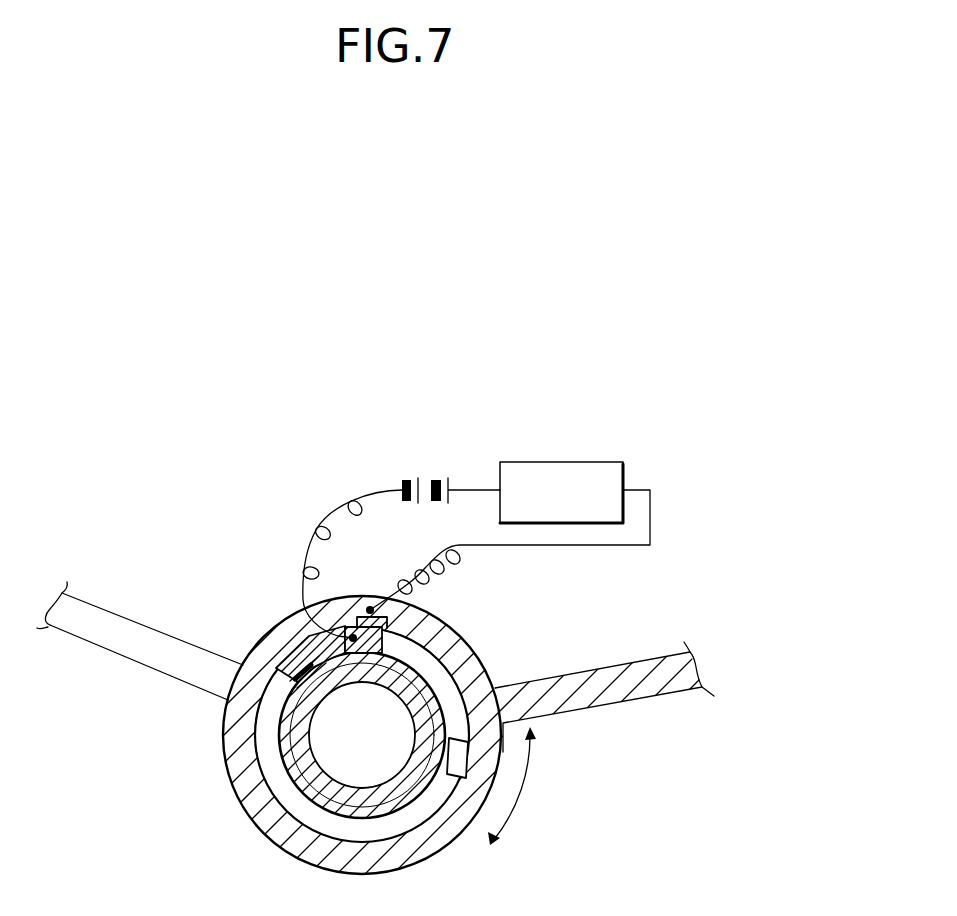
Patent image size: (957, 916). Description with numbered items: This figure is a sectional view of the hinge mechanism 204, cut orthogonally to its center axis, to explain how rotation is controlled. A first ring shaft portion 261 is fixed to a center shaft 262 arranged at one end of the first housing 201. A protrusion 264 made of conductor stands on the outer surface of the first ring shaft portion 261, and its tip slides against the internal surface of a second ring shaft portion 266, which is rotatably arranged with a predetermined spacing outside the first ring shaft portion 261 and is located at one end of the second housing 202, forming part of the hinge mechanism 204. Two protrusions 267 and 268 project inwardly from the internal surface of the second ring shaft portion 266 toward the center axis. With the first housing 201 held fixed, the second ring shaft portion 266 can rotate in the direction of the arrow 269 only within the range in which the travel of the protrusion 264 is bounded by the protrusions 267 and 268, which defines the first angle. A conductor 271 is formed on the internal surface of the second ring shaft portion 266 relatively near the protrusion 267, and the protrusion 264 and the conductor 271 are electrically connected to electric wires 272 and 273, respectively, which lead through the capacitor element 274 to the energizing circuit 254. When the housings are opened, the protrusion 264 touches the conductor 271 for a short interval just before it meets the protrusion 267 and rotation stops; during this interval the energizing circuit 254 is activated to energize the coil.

The first housing 201 is at (130, 631).
The second housing 202 is at (579, 686).
The hinge mechanism 204 is at (603, 834).
The energizing circuit 254 is at (566, 463).
The first ring shaft portion 261 is at (262, 740).
The center shaft 262 is at (275, 826).
The protrusion 264 is at (413, 609).
The second ring shaft portion 266 is at (462, 648).
The protrusion 267 is at (314, 676).
The protrusion 268 is at (445, 749).
The arrow 269 is at (522, 788).
The conductor 271 is at (368, 612).
The electric wire 272 is at (497, 546).
The electric wire 273 is at (303, 543).
The capacitor 274 is at (402, 487).